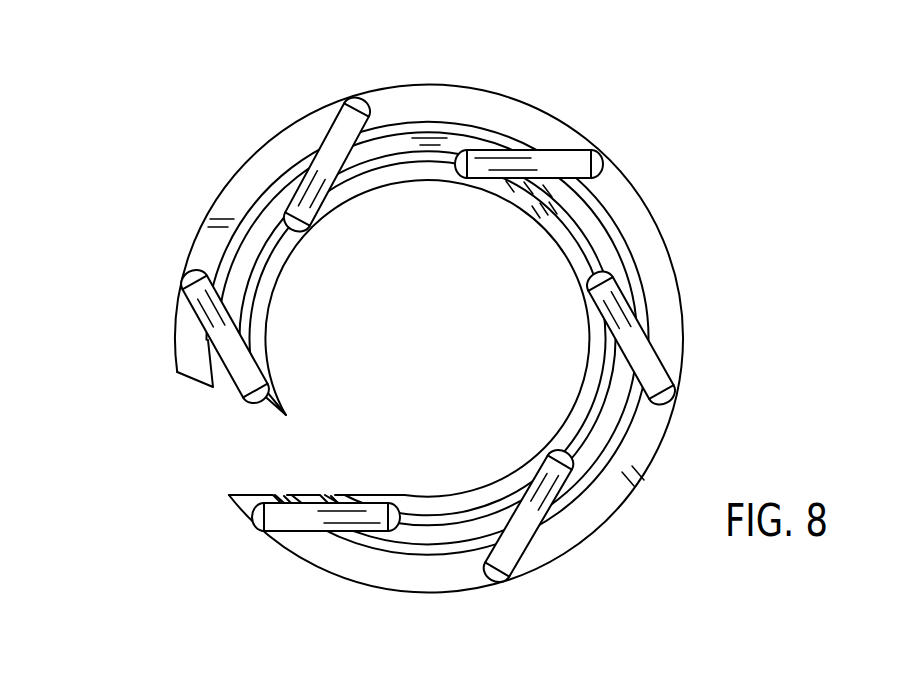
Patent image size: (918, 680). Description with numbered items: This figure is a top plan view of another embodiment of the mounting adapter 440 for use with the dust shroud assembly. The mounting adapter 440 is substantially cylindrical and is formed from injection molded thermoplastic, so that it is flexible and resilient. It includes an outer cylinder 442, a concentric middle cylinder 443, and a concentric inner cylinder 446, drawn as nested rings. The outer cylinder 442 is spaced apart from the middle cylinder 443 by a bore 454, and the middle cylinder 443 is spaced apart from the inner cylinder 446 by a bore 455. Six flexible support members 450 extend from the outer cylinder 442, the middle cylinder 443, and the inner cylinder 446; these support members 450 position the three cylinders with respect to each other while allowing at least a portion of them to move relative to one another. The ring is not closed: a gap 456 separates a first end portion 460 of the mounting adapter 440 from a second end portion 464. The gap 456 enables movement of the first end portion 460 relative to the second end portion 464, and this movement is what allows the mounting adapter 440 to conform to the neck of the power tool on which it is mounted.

The mounting adapter 440 is at (73, 209).
The outer cylinder 442 is at (466, 108).
The middle cylinder 443 is at (383, 148).
The inner cylinder 446 is at (406, 172).
The flexible support members 450 is at (327, 158).
The bore 454 is at (615, 234).
The bore 455 is at (602, 400).
The gap 456 is at (190, 443).
The first end portion 460 is at (232, 402).
The second end portion 464 is at (293, 492).